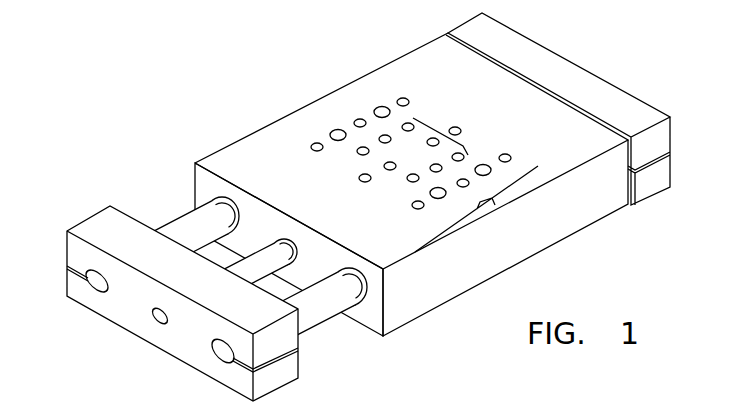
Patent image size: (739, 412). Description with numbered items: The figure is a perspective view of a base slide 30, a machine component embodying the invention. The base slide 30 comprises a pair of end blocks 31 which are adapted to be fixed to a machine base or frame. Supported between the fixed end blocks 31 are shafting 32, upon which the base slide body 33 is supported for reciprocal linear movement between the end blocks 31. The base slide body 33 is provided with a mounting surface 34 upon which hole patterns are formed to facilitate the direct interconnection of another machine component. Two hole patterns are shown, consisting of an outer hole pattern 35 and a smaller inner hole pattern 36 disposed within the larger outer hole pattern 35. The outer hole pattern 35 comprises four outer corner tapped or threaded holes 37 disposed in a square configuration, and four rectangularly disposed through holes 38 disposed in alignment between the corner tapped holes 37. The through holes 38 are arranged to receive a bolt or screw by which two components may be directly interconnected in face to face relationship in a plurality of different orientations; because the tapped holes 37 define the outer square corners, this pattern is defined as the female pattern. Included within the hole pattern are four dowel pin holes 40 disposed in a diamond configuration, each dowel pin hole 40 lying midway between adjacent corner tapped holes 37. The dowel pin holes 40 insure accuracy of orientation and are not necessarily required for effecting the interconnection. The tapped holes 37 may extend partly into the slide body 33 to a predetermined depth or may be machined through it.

The base slide 30 is at (313, 70).
The end block 31 is at (590, 93).
The shafting 32 is at (188, 226).
The base slide body 33 is at (445, 283).
The mounting surface 34 is at (432, 53).
The outer hole pattern 35 is at (496, 206).
The inner hole pattern 36 is at (470, 151).
The tapped hole 37 is at (311, 147).
The through hole 38 is at (330, 134).
The dowel pin hole 40 is at (357, 121).